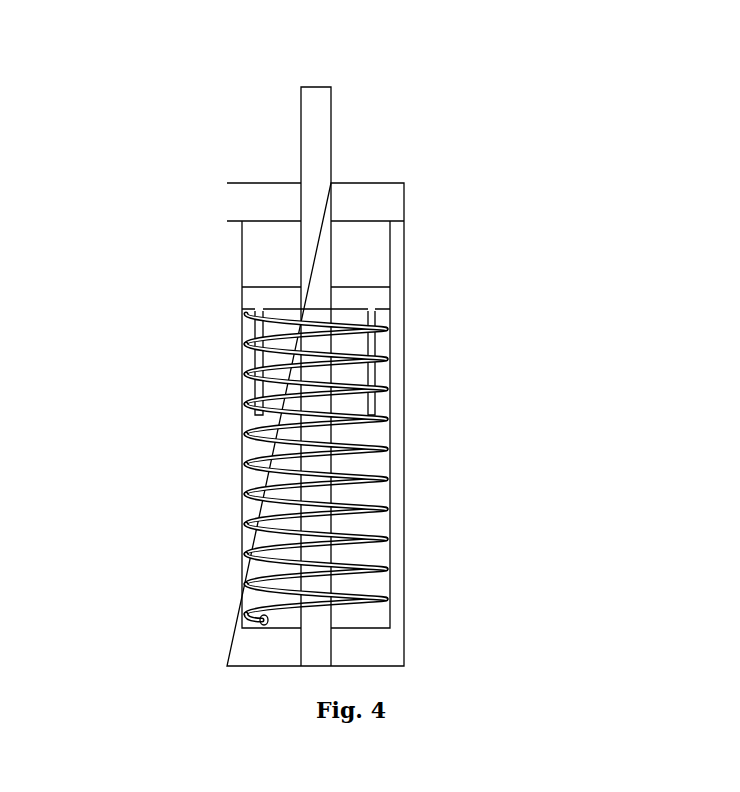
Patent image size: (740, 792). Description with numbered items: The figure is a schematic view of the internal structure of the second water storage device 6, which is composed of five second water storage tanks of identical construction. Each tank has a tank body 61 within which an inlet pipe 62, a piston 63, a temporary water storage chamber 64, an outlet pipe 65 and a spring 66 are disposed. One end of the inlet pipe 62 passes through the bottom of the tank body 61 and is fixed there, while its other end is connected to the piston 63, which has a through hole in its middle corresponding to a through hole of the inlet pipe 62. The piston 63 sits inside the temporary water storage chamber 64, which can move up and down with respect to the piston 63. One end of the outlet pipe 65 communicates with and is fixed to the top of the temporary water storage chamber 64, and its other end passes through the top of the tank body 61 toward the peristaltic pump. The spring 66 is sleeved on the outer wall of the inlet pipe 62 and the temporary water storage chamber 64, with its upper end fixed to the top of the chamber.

The second water storage device 6 is at (157, 183).
The tank body 61 is at (404, 220).
The inlet pipe 62 is at (331, 648).
The piston 63 is at (350, 377).
The temporary water storage chamber 64 is at (337, 347).
The outlet pipe 65 is at (331, 86).
The spring 66 is at (353, 450).